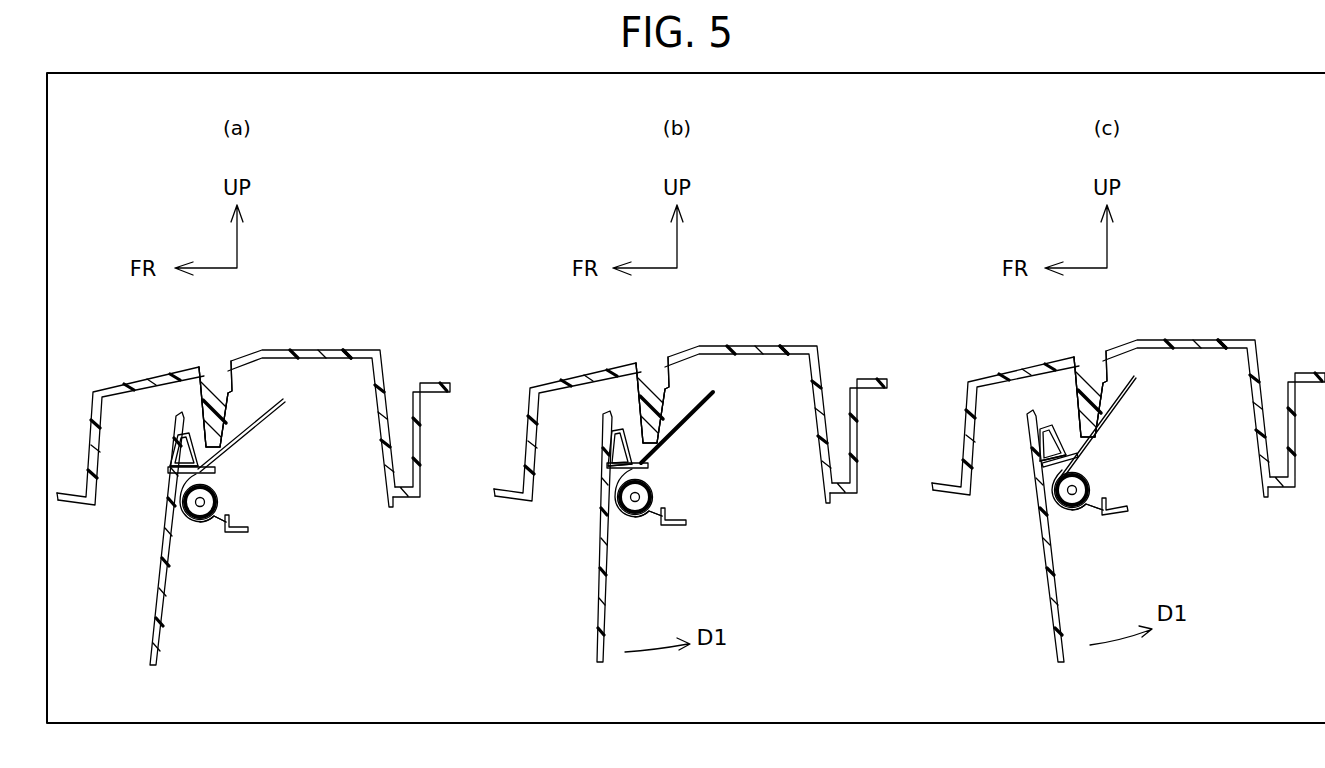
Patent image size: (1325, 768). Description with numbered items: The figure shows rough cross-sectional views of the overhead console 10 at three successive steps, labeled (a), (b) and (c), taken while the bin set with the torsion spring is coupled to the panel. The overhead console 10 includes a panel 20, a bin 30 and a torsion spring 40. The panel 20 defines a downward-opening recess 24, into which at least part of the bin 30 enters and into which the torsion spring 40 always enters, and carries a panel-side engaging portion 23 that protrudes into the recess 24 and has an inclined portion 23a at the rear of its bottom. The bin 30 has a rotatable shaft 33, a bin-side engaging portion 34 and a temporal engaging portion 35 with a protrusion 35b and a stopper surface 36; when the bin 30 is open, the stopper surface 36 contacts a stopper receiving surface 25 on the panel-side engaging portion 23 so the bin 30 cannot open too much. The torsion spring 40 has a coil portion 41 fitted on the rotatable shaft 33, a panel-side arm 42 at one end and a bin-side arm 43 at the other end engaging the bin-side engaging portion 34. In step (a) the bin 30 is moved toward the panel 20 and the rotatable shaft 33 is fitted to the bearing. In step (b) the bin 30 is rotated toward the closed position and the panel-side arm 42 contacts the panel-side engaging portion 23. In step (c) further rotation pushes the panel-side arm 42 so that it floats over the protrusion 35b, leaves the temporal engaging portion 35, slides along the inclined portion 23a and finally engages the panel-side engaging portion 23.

The overhead console 10 is at (437, 484).
The panel 20 is at (297, 350).
The panel-side engaging portion 23 is at (217, 393).
The inclined portion 23a is at (228, 410).
The recess 24 is at (342, 364).
The stopper receiving surface 25 is at (193, 413).
The bin 30 is at (152, 583).
The rotatable shaft 33 is at (189, 506).
The bin-side engaging portion 34 is at (250, 528).
The temporal engaging portion 35 is at (188, 470).
The protrusion 35b is at (215, 468).
The stopper surface 36 is at (203, 455).
The torsion spring 40 is at (220, 498).
The coil portion 41 is at (197, 513).
The panel-side arm 42 is at (262, 430).
The bin-side arm 43 is at (220, 524).